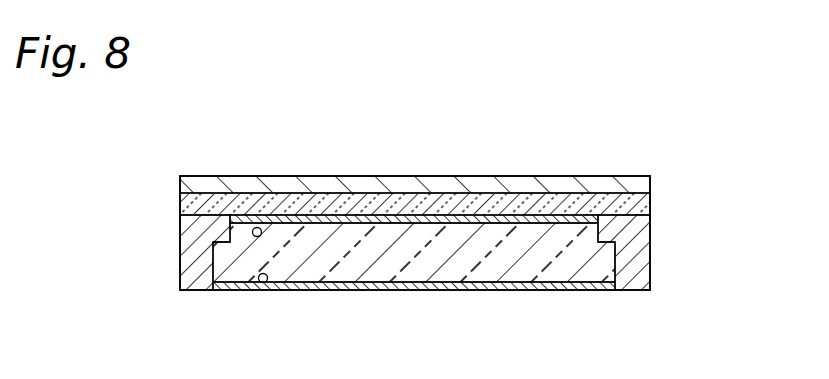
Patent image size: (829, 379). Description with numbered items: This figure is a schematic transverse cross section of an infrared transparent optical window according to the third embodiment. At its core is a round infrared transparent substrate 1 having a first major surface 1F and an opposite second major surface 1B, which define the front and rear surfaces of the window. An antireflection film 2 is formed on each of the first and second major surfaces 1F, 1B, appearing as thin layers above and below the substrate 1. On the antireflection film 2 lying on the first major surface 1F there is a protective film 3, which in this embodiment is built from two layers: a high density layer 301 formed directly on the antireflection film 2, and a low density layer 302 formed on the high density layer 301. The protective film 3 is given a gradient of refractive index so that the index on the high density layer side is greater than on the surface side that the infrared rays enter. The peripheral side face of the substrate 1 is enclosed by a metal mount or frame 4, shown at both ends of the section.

The infrared transparent substrate 1 is at (292, 275).
The first major surface 1F is at (253, 228).
The second major surface 1B is at (260, 284).
The antireflection film 2 is at (294, 222).
The protective film 3 is at (430, 136).
The high density layer 301 is at (626, 186).
The low density layer 302 is at (633, 106).
The metal mount or frame 4 is at (196, 252).